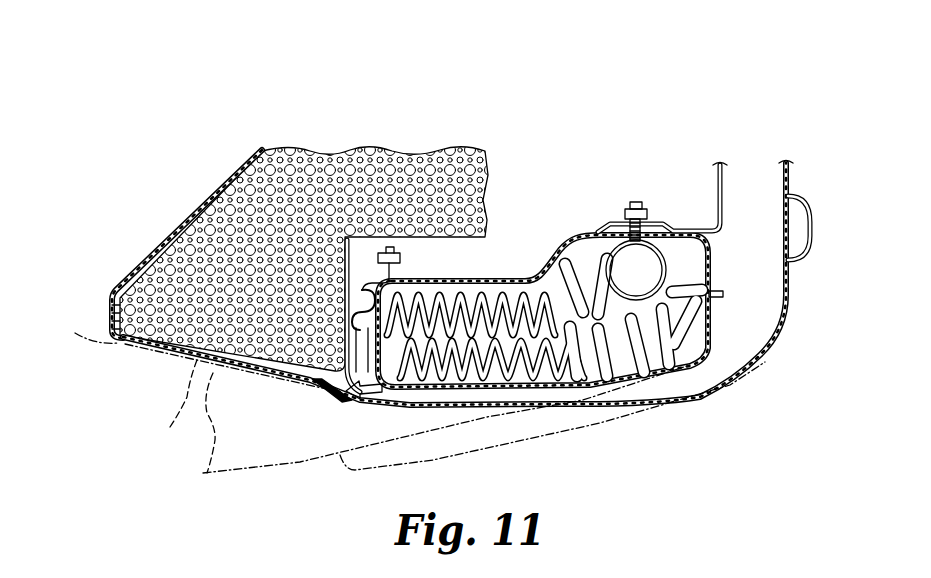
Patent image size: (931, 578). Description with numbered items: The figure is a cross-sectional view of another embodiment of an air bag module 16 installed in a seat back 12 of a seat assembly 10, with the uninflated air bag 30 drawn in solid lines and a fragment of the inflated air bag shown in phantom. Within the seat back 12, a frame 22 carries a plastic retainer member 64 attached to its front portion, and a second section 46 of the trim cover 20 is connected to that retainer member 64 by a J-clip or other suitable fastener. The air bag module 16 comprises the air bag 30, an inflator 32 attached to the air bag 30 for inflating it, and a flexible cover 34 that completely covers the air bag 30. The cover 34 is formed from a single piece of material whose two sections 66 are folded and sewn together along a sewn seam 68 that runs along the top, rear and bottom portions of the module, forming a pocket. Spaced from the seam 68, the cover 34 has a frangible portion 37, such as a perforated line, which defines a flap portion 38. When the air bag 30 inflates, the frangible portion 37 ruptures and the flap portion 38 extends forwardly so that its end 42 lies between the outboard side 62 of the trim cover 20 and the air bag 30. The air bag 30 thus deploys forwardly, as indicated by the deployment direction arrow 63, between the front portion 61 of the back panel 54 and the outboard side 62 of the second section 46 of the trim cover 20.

The seat assembly 10 is at (160, 128).
The seat back 12 is at (135, 210).
The air bag module 16 is at (457, 407).
The trim cover 20 is at (135, 362).
The frame 22 is at (485, 281).
The air bag 30 is at (238, 475).
The inflator 32 is at (647, 279).
The cover 34 is at (707, 229).
The frangible portion 37 is at (705, 359).
The flap portion 38 is at (607, 432).
The end of flap portion 42 is at (766, 389).
The second section of trim cover 46 is at (193, 362).
The back panel 54 is at (530, 447).
The front portion of back panel 61 is at (322, 400).
The outboard side of second section 62 is at (282, 375).
The deployment direction arrow 63 is at (368, 400).
The plastic retainer member 64 is at (352, 272).
The sections of cover 66 is at (712, 267).
The sewn seam 68 is at (724, 295).